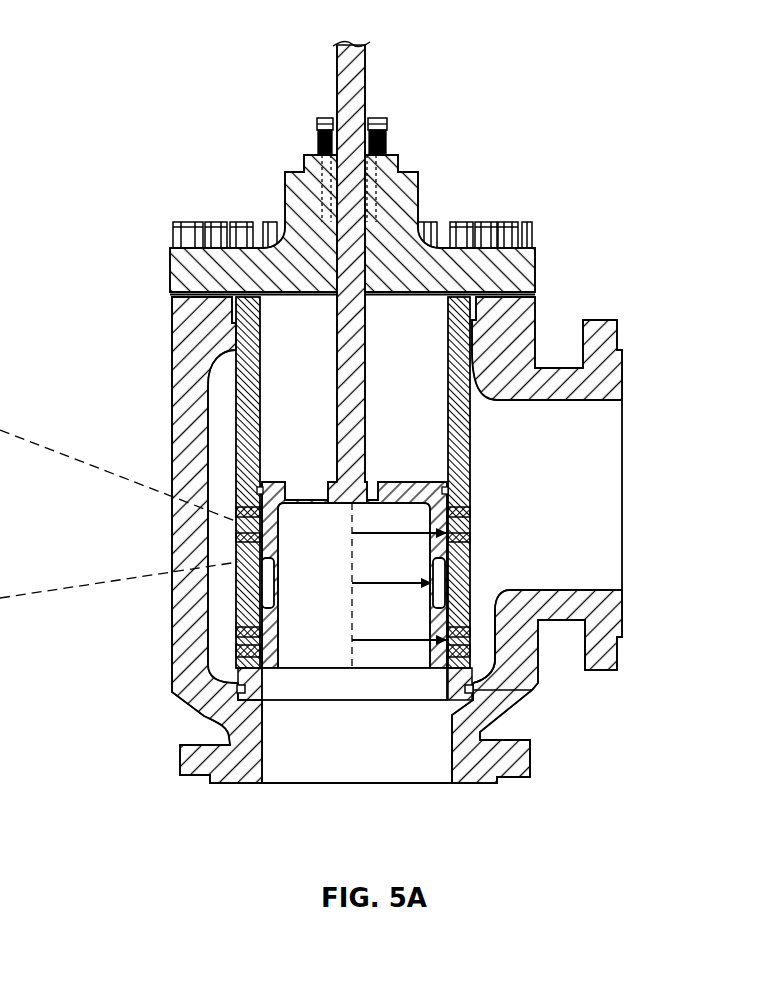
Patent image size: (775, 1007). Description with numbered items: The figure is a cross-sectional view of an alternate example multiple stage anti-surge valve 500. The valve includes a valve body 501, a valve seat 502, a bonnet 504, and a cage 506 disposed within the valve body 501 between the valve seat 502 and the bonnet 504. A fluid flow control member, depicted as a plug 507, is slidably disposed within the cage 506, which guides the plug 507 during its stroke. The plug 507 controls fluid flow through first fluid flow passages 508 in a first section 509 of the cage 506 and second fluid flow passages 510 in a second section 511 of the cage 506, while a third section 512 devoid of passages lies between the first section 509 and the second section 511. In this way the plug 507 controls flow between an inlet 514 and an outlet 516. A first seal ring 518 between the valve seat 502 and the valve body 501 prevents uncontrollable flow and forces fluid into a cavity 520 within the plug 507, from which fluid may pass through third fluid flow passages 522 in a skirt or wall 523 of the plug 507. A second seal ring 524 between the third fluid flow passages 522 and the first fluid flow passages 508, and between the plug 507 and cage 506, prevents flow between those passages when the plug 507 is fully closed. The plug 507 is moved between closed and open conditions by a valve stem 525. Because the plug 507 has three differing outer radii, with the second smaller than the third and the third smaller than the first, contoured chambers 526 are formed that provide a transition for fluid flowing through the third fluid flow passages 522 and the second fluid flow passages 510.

The multiple stage anti-surge valve 500 is at (562, 314).
The valve body 501 is at (522, 756).
The valve seat 502 is at (378, 690).
The bonnet 504 is at (535, 268).
The cage 506 is at (473, 488).
The plug 507 is at (371, 478).
The first fluid flow passages 508 is at (540, 637).
The first section 509 is at (176, 688).
The second fluid flow passages 510 is at (472, 520).
The second section 511 is at (238, 482).
The third section 512 is at (238, 573).
The inlet 514 is at (386, 778).
The outlet 516 is at (612, 437).
The first seal ring 518 is at (540, 683).
The cavity 520 is at (337, 611).
The third fluid flow passages 522 is at (238, 650).
The skirt or wall 523 is at (448, 600).
The second seal ring 524 is at (493, 613).
The valve stem 525 is at (360, 172).
The contoured chambers 526 is at (452, 565).